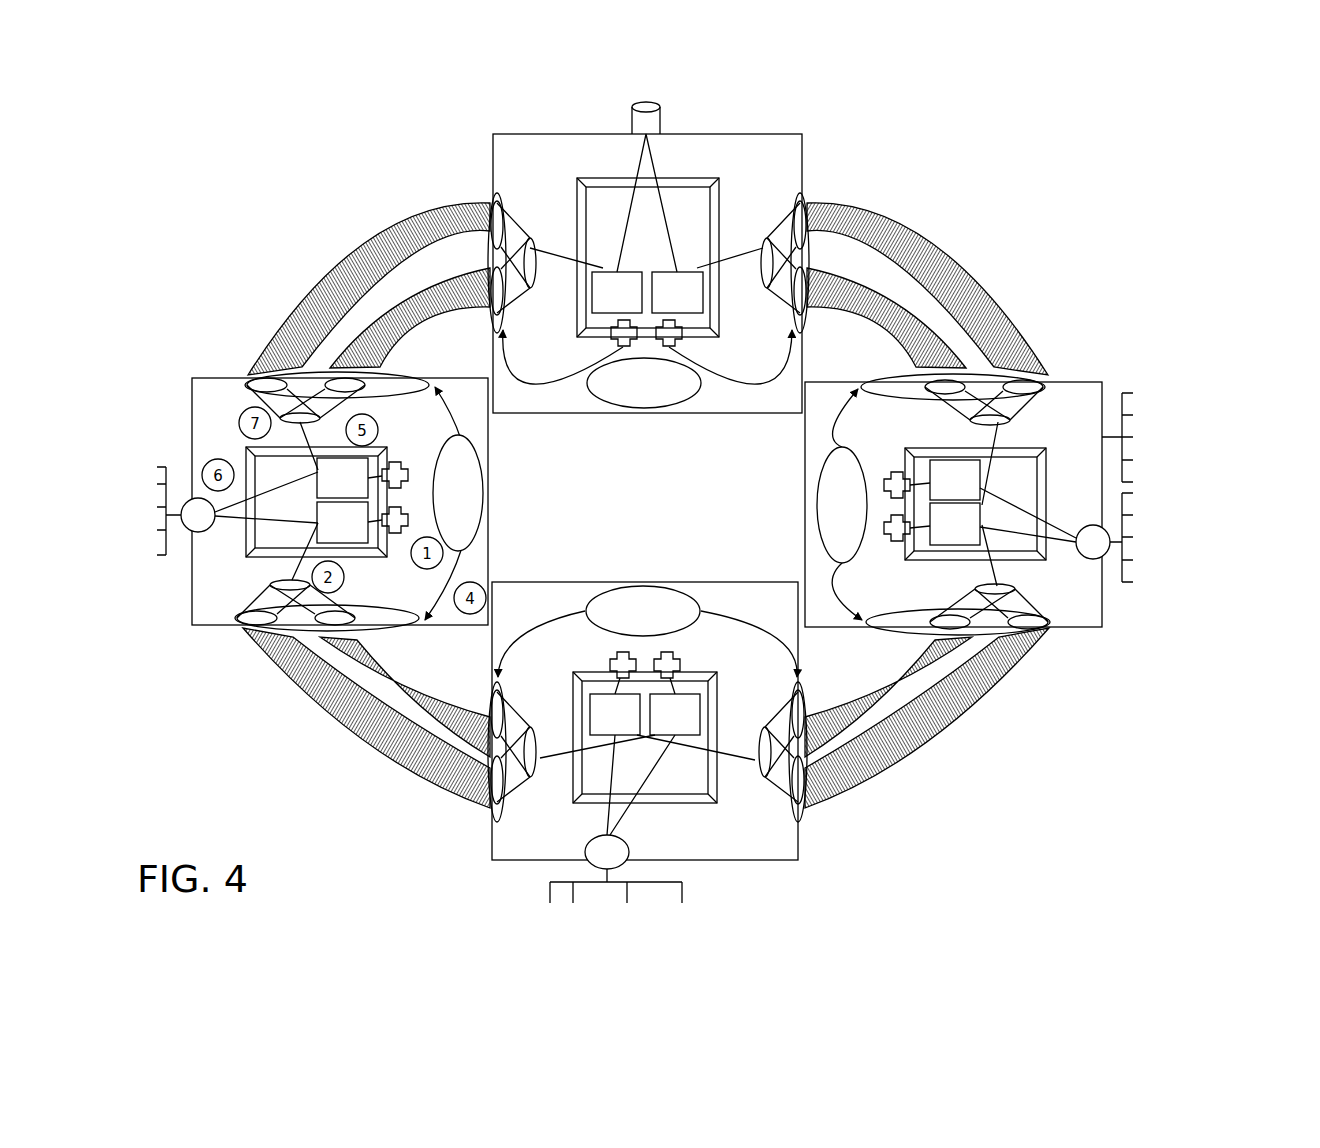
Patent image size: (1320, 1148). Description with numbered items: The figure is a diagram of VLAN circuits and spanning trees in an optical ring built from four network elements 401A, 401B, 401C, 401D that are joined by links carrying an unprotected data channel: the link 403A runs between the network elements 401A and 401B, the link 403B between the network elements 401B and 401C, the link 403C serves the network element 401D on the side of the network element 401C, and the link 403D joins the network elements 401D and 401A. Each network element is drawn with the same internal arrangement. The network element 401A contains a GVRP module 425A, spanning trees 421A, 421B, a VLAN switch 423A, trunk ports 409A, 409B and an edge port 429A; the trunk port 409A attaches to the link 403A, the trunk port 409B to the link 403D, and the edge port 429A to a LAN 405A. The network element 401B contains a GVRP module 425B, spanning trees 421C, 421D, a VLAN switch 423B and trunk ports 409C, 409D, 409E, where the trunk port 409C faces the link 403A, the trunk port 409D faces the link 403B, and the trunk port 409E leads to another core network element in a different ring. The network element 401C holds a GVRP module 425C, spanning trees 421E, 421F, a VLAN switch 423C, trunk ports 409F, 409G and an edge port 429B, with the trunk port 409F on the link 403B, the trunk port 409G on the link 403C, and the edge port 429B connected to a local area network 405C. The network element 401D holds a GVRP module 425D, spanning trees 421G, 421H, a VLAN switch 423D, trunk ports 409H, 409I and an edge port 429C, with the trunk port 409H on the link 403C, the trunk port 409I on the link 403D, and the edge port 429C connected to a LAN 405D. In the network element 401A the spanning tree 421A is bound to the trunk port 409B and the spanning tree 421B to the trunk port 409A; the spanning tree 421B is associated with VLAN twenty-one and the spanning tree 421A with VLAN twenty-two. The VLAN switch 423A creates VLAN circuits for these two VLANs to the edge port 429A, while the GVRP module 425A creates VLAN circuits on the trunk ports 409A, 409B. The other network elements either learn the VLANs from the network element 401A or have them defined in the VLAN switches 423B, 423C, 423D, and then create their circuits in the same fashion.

The network element 401A is at (200, 365).
The network element 401B is at (797, 126).
The network element 401C is at (1110, 605).
The network element 401D is at (790, 870).
The link 403A is at (368, 237).
The link 403B is at (955, 255).
The link 403C is at (985, 732).
The link 403D is at (300, 737).
The LAN 405A is at (145, 509).
The local area network 405C is at (1143, 538).
The LAN 405D is at (605, 892).
The trunk port 409A is at (252, 399).
The trunk port 409B is at (300, 625).
The trunk port 409C is at (483, 225).
The trunk port 409D is at (805, 248).
The trunk port 409E is at (663, 112).
The trunk port 409F is at (990, 375).
The trunk port 409G is at (1012, 637).
The trunk port 409H is at (806, 772).
The trunk port 409I is at (493, 785).
The spanning tree 421A is at (387, 600).
The spanning tree 421B is at (394, 462).
The spanning tree 421C is at (608, 355).
The spanning tree 421D is at (690, 355).
The spanning tree 421E is at (882, 548).
The spanning tree 421F is at (882, 470).
The spanning tree 421G is at (725, 652).
The spanning tree 421H is at (567, 652).
The VLAN switch 423A is at (231, 555).
The VLAN switch 423B is at (588, 170).
The VLAN switch 423C is at (1035, 437).
The VLAN switch 423D is at (718, 740).
The GVRP module 425A is at (483, 458).
The GVRP module 425B is at (648, 409).
The GVRP module 425C is at (817, 508).
The GVRP module 425D is at (640, 586).
The edge port 429A is at (179, 532).
The edge port 429B is at (1104, 528).
The edge port 429C is at (580, 863).